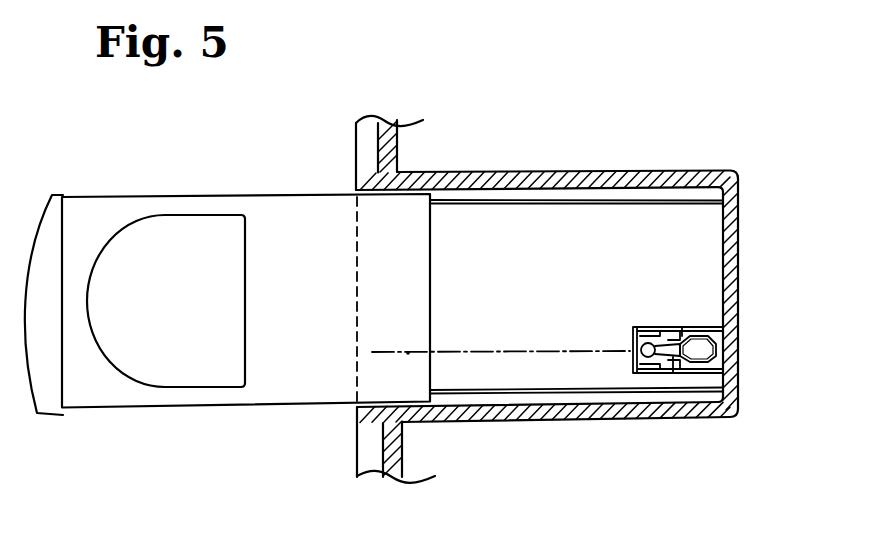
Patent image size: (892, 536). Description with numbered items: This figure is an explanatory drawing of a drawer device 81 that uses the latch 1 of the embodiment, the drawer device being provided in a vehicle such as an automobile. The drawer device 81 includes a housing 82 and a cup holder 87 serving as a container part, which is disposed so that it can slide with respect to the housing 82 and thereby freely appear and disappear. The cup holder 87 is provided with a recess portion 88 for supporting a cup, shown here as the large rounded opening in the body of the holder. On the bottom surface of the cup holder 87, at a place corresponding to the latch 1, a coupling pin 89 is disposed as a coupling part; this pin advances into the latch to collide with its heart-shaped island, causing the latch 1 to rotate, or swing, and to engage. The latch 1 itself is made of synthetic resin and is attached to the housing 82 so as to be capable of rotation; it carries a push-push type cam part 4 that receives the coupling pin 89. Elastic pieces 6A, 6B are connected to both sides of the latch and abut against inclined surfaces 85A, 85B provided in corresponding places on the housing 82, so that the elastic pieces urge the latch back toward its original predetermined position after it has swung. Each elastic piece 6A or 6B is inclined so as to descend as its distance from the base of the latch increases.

The latch 1 is at (710, 372).
The cam part 4 is at (678, 349).
The elastic piece 6A is at (672, 330).
The elastic piece 6B is at (672, 362).
The drawer device 81 is at (327, 292).
The housing 82 is at (500, 421).
The inclined surface 85A is at (650, 334).
The inclined surface 85B is at (653, 365).
The cup holder 87 is at (278, 392).
The recess portion 88 is at (191, 373).
The coupling pin 89 is at (372, 352).